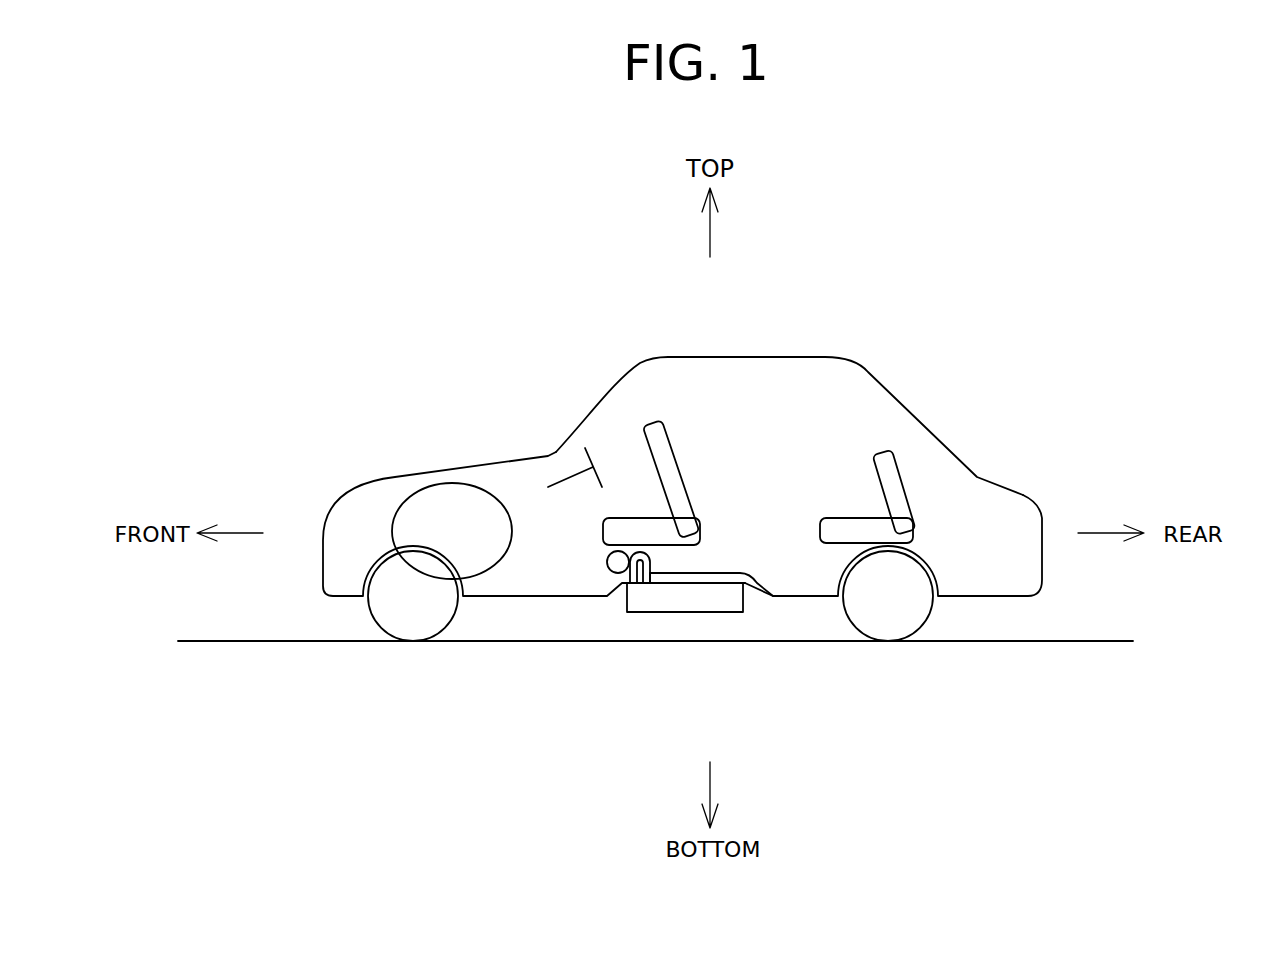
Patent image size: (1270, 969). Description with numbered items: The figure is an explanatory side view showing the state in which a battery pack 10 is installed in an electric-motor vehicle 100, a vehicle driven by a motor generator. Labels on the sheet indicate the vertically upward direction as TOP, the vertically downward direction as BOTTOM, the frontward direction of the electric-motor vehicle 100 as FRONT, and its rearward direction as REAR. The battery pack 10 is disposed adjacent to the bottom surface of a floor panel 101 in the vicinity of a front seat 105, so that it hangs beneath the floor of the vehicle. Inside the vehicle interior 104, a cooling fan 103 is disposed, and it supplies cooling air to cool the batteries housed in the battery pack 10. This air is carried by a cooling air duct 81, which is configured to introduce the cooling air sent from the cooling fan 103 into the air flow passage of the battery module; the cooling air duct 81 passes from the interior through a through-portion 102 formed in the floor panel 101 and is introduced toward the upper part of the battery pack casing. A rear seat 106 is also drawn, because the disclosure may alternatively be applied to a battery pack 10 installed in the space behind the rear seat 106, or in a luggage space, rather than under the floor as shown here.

The electric-motor vehicle 100 is at (1008, 361).
The battery pack 10 is at (699, 630).
The floor panel 101 is at (723, 573).
The through-portion 102 is at (652, 571).
The cooling fan 103 is at (607, 566).
The cooling air duct 81 is at (650, 552).
The vehicle interior 104 is at (811, 433).
The front seat 105 is at (703, 447).
The rear seat 106 is at (912, 462).